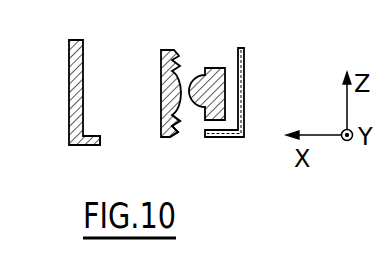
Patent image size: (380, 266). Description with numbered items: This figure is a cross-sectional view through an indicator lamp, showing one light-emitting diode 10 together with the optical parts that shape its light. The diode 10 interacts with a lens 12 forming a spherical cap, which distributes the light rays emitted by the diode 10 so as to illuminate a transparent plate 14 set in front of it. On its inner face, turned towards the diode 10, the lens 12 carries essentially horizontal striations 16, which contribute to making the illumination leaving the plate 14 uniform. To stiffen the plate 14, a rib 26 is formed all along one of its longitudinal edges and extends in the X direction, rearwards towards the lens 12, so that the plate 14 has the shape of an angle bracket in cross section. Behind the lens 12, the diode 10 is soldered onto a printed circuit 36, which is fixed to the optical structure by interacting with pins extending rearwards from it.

The light-emitting diode 10 is at (214, 68).
The lens 12 is at (165, 50).
The transparent plate 14 is at (74, 40).
The horizontal striations 16 is at (174, 134).
The rib 26 is at (93, 145).
The printed circuit 36 is at (244, 80).